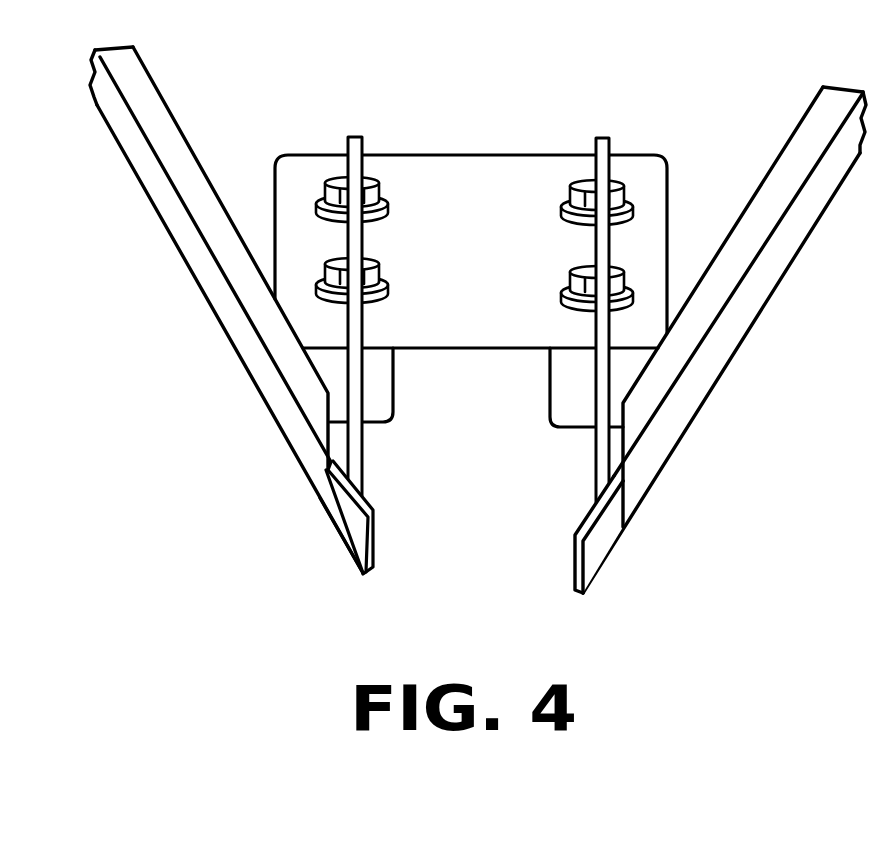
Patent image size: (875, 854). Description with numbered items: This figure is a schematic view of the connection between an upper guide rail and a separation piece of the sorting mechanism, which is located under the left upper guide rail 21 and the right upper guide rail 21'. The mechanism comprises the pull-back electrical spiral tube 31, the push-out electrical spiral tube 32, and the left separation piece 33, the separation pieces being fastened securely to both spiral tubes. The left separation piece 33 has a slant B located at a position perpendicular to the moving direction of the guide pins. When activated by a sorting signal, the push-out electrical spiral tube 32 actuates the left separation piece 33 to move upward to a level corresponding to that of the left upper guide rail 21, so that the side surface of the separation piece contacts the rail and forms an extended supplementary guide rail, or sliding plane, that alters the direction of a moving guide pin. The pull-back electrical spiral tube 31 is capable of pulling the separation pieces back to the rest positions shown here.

The left upper guide rail 21 is at (226, 302).
The right upper guide rail 21' is at (720, 316).
The pull-back electrical spiral tube 31 is at (380, 262).
The push-out electrical spiral tube 32 is at (380, 181).
The left separation piece 33 is at (354, 137).
The slant B is at (366, 500).